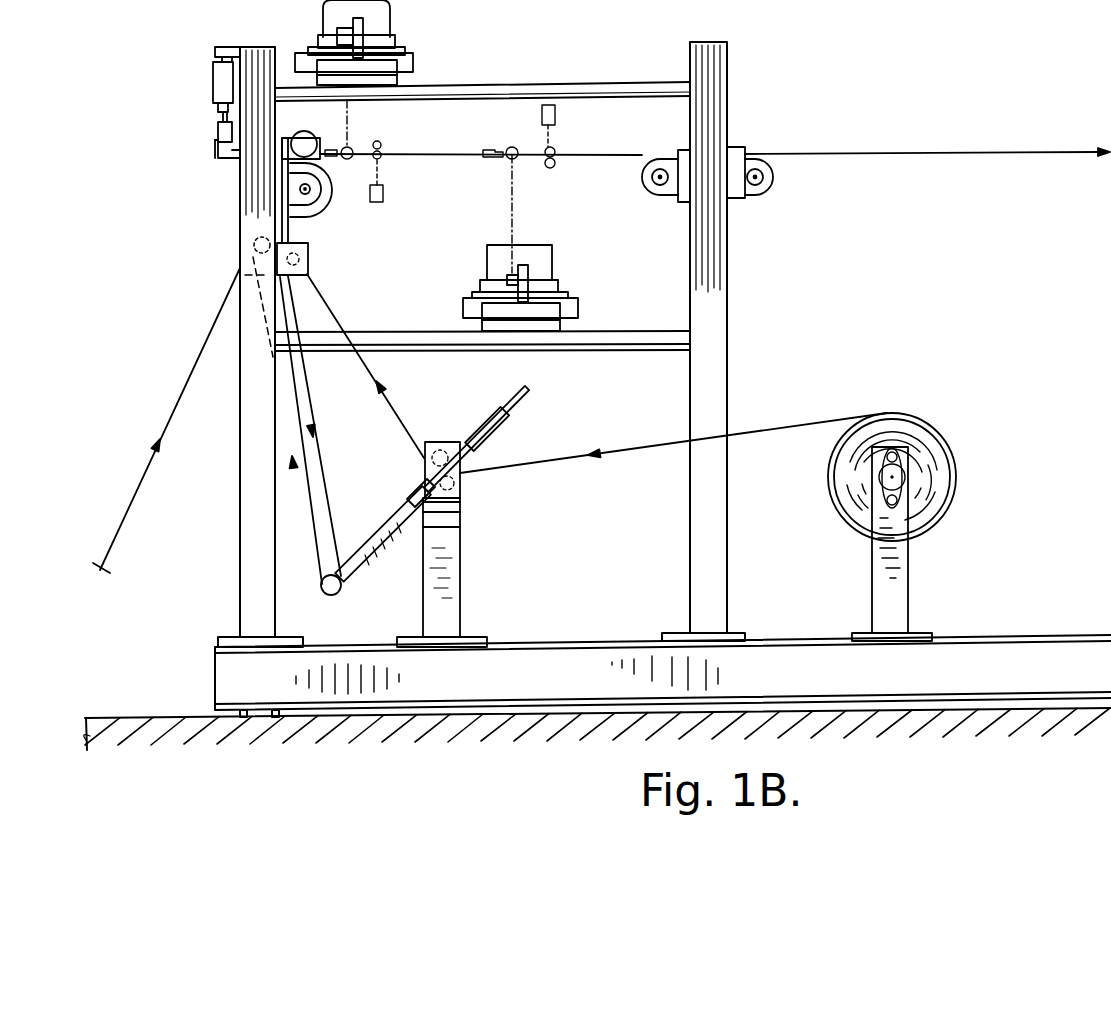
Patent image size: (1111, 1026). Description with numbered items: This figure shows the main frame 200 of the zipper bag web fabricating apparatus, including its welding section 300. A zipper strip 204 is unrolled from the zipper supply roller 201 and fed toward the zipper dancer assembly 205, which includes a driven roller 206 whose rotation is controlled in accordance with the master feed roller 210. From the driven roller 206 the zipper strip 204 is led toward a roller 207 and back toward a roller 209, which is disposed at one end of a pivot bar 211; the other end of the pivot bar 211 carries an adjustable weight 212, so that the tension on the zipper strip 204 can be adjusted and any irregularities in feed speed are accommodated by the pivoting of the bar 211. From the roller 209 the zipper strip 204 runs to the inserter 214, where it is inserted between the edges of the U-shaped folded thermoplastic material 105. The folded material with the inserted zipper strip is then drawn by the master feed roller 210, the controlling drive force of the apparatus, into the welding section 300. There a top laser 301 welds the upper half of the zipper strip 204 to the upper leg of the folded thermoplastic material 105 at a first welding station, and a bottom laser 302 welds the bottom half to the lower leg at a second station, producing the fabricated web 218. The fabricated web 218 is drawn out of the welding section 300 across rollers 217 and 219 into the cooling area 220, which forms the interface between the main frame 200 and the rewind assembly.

The folded thermoplastic material 105 is at (187, 382).
The main frame 200 is at (903, 313).
The zipper supply roller 201 is at (952, 456).
The zipper strip 204 is at (803, 423).
The zipper dancer assembly 205 is at (480, 495).
The driven roller 206 is at (445, 442).
The roller 207 is at (308, 250).
The roller 209 is at (333, 595).
The master feed roller 210 is at (322, 212).
The pivot bar 211 is at (383, 518).
The adjustable weight 212 is at (500, 435).
The inserter 214 is at (226, 253).
The roller 217 is at (655, 194).
The fabricated web 218 is at (855, 152).
The roller 219 is at (770, 188).
The cooling area 220 is at (1060, 128).
The welding section 300 is at (180, 42).
The top laser 301 is at (390, 12).
The bottom laser 302 is at (553, 255).